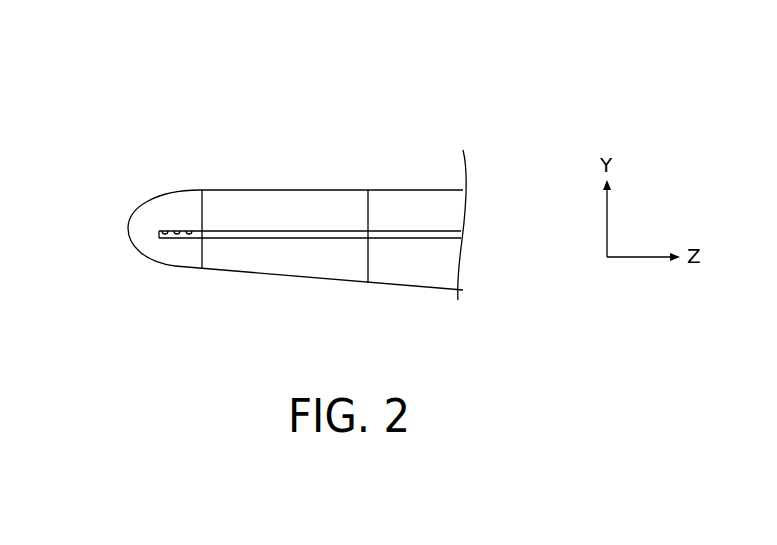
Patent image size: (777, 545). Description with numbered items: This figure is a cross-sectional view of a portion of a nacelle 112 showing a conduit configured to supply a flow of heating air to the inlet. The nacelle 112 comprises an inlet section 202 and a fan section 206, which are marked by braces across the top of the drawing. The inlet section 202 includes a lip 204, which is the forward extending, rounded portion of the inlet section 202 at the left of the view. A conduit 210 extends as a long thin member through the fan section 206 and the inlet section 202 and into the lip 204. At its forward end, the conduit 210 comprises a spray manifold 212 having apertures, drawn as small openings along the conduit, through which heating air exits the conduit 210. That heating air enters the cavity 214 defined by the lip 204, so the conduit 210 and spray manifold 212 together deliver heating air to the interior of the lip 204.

The nacelle 112 is at (403, 92).
The inlet section 202 is at (368, 90).
The lip 204 is at (203, 173).
The fan section 206 is at (465, 177).
The conduit 210 is at (263, 240).
The spray manifold 212 is at (177, 240).
The cavity 214 is at (140, 228).